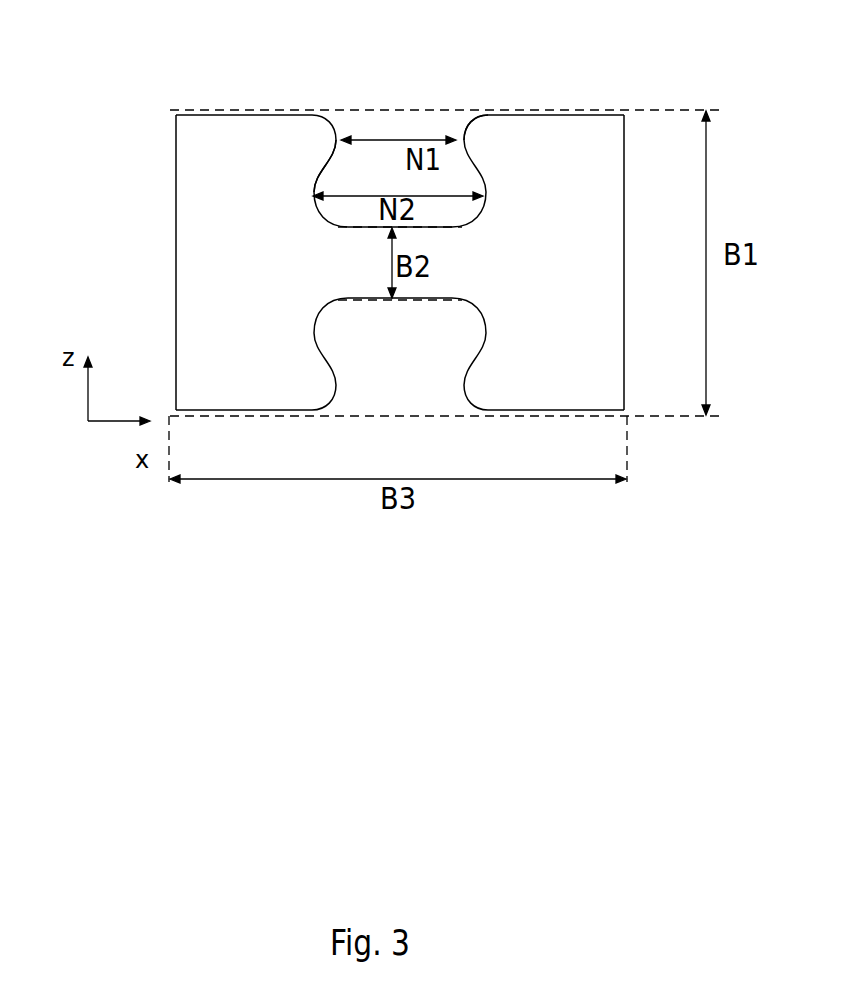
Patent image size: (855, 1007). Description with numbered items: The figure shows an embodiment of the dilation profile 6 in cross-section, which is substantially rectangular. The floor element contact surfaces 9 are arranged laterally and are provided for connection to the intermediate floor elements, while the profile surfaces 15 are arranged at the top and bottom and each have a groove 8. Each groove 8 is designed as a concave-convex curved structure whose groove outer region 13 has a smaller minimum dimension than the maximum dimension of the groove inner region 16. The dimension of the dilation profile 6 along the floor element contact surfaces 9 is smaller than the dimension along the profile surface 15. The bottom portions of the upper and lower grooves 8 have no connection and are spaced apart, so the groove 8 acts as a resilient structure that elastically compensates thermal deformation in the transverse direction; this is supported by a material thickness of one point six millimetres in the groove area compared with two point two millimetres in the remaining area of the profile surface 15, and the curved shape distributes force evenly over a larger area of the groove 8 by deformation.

The dilation profile 6 is at (390, 240).
The groove 8 is at (379, 128).
The floor element contact surface 9 is at (170, 262).
The groove outer region 13 is at (457, 138).
The profile surface 15 is at (523, 110).
The groove inner region 16 is at (388, 180).